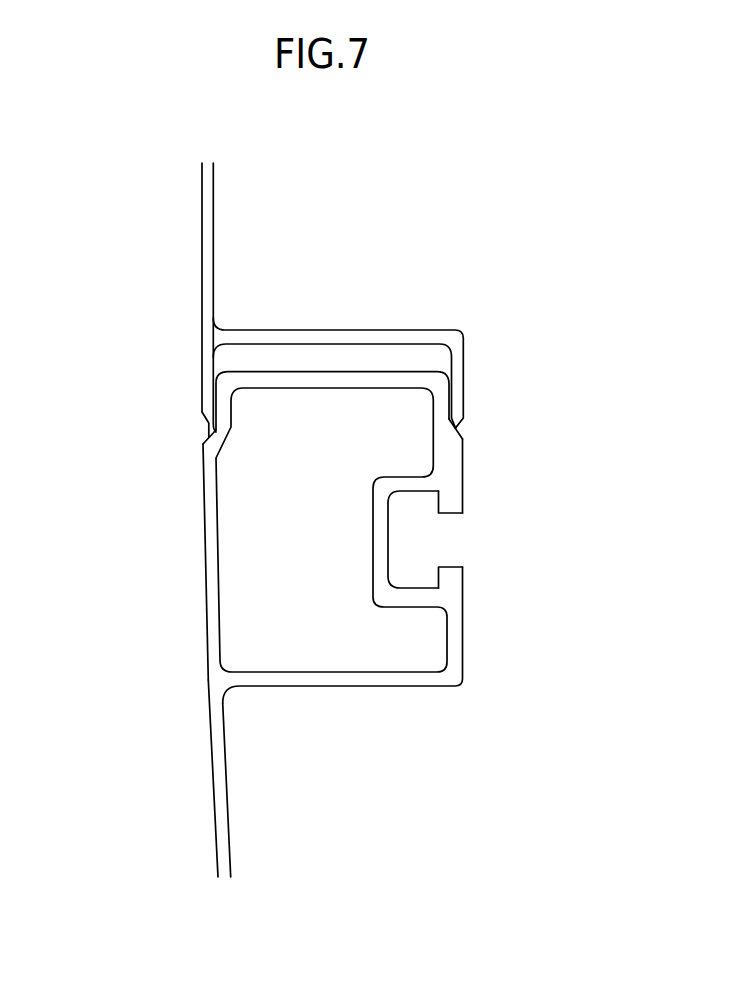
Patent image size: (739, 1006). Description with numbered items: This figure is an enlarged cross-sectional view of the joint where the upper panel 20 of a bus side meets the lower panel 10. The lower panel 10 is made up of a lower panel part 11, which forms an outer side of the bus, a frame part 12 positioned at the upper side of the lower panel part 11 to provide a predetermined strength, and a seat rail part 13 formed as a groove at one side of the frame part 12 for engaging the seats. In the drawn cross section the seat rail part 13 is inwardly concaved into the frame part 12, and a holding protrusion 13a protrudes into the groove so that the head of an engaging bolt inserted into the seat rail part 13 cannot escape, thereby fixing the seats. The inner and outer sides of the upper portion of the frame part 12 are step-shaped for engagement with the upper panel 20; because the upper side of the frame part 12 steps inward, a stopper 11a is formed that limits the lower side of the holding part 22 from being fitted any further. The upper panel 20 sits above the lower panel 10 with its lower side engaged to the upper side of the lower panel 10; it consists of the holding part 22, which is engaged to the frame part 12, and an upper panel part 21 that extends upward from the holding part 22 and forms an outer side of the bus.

The lower panel 10 is at (295, 705).
The lower panel part 11 is at (390, 678).
The stopper 11a is at (207, 436).
The frame part 12 is at (215, 782).
The seat rail part 13 is at (416, 528).
The holding protrusion 13a is at (452, 505).
The upper panel 20 is at (295, 258).
The upper panel part 21 is at (209, 269).
The holding part 22 is at (209, 392).